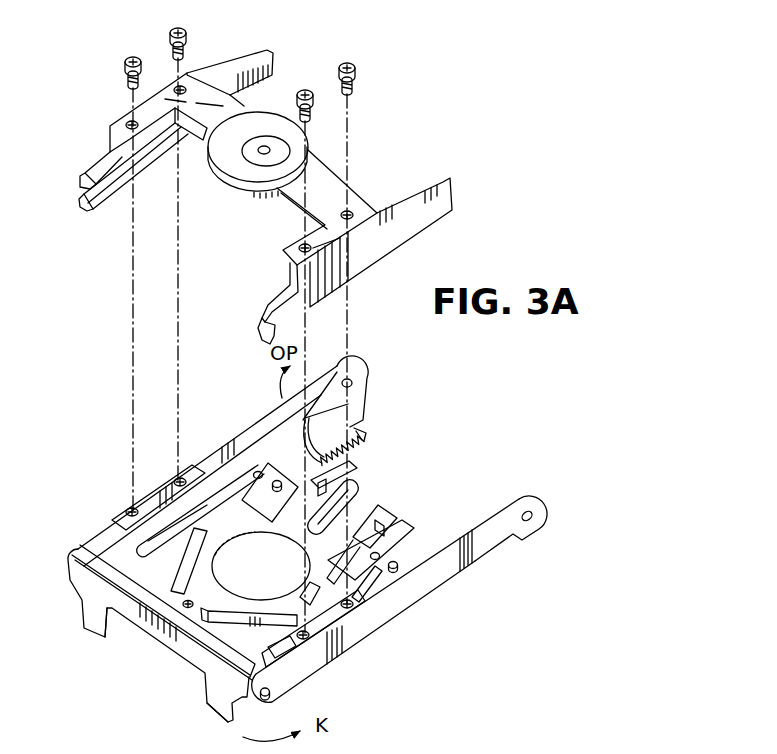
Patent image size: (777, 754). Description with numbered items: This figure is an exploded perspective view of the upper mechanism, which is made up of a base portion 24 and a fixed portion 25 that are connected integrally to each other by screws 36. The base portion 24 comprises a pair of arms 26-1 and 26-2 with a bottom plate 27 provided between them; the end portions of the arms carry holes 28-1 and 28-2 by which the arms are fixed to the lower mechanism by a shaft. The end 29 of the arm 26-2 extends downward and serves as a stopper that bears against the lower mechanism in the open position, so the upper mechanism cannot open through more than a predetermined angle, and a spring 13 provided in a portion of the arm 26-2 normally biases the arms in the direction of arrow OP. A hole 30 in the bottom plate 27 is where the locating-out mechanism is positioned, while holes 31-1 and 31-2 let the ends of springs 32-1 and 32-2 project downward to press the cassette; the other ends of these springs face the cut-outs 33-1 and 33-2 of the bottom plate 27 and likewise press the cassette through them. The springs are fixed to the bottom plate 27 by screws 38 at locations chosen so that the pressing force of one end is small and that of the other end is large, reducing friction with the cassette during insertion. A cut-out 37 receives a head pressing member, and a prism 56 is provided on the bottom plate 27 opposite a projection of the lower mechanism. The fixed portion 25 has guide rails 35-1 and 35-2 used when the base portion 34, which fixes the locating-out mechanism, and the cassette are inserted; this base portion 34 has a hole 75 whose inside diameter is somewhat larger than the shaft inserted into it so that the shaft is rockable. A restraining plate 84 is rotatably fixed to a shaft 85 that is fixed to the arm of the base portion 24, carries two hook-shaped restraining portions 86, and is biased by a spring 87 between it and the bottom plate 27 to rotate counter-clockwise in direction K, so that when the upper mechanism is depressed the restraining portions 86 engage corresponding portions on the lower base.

The spring 13 is at (325, 455).
The base portion 24 is at (446, 589).
The fixed portion 25 is at (411, 186).
The arm 26-1 is at (474, 557).
The arm 26-2 is at (343, 362).
The bottom plate 27 is at (216, 629).
The hole 28-1 is at (533, 517).
The hole 28-2 is at (353, 383).
The end of the arm 29 is at (367, 438).
The hole 30 is at (242, 553).
The hole 31-1 is at (285, 673).
The hole 31-2 is at (137, 547).
The spring 32-1 is at (372, 588).
The spring 32-2 is at (228, 492).
The cut-out 33-1 is at (388, 521).
The cut-out 33-2 is at (351, 467).
The base portion 34 is at (256, 181).
The guide rail 35-1 is at (266, 330).
The guide rail 35-2 is at (85, 212).
The screw 36 is at (124, 61).
The cut-out 37 is at (344, 510).
The screw 38 is at (275, 482).
The prism 56 is at (307, 593).
The hole 75 is at (258, 147).
The restraining plate 84 is at (78, 582).
The shaft 85 is at (270, 697).
The restraining portion 86 is at (112, 637).
The spring 87 is at (192, 550).